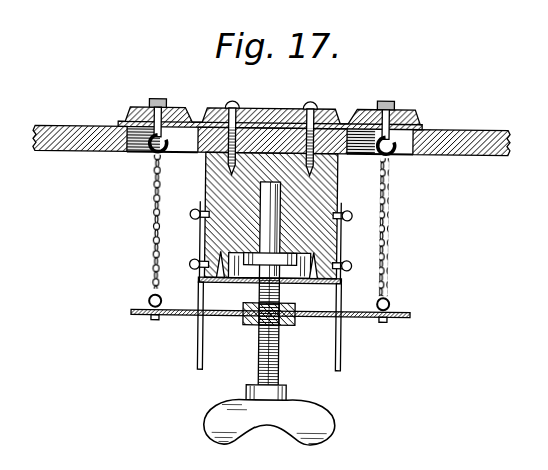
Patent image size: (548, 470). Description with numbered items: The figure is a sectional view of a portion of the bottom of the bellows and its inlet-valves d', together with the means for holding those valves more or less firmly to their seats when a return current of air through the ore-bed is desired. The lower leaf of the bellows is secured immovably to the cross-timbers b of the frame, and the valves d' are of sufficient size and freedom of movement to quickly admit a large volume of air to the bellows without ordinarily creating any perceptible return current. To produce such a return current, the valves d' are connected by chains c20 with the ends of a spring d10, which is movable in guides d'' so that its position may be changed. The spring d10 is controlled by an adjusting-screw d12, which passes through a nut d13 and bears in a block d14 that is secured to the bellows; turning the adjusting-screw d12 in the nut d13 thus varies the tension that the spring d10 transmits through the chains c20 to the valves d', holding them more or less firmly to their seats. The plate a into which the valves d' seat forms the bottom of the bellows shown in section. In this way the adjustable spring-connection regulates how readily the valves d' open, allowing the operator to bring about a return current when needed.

The plate a is at (272, 121).
The cross-timbers b is at (343, 238).
The chains c20 is at (152, 218).
The valves d' is at (276, 118).
The guides d'' is at (265, 329).
The spring d10 is at (183, 318).
The adjusting-screw d12 is at (253, 327).
The nut d13 is at (269, 314).
The block d14 is at (267, 202).